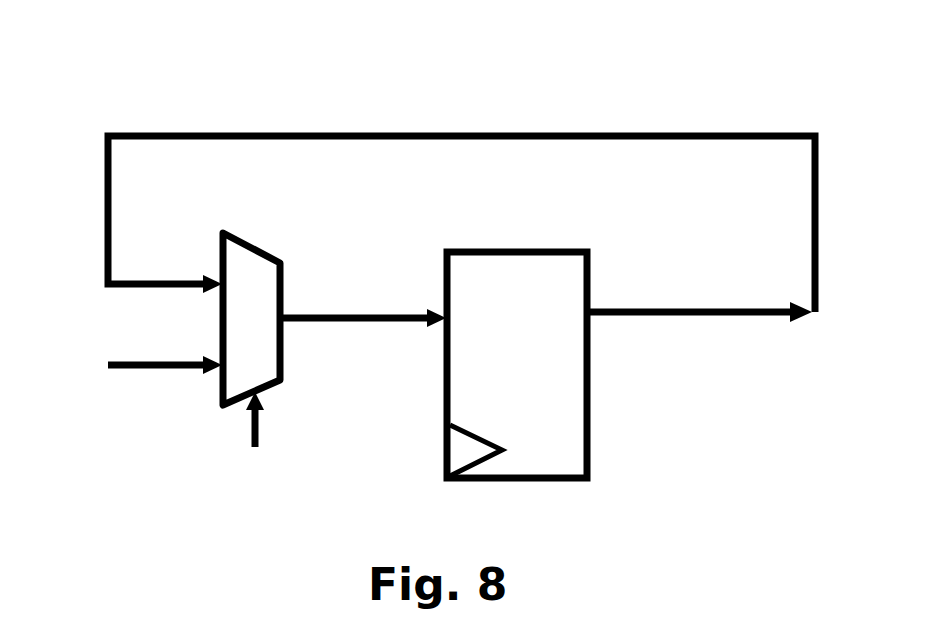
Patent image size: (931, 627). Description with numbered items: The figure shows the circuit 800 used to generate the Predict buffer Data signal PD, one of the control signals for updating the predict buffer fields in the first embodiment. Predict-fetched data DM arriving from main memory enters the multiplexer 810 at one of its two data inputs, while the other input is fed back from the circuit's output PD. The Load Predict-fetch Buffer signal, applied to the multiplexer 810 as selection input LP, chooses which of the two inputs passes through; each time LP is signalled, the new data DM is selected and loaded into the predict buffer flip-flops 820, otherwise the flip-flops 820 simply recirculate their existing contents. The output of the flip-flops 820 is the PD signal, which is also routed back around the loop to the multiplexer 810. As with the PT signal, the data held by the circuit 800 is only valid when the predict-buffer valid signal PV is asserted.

The circuit 800 is at (336, 58).
The multiplexer 810 is at (214, 226).
The predict buffer flip-flops 820 is at (517, 365).